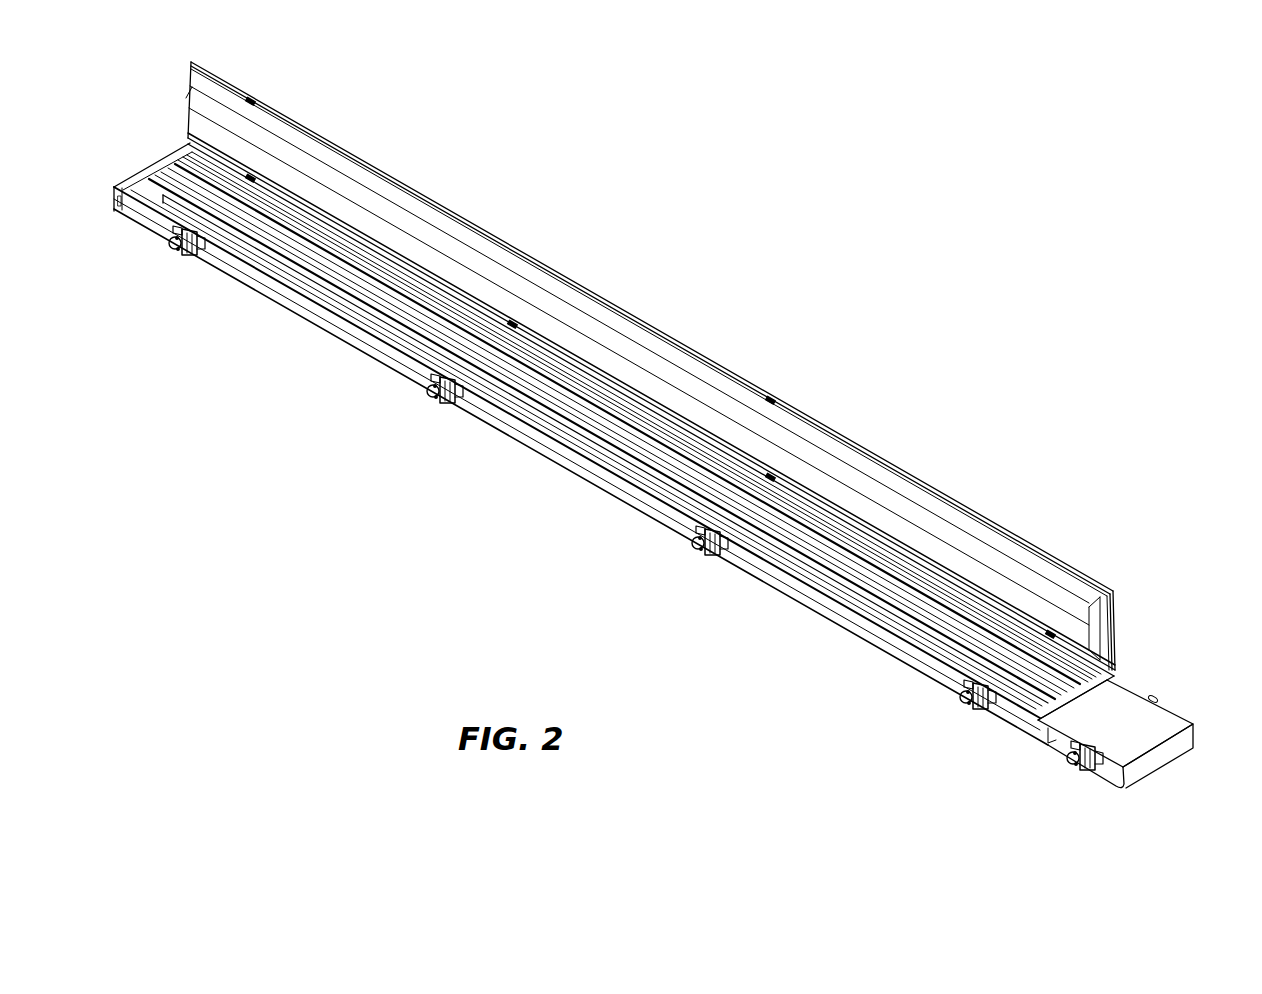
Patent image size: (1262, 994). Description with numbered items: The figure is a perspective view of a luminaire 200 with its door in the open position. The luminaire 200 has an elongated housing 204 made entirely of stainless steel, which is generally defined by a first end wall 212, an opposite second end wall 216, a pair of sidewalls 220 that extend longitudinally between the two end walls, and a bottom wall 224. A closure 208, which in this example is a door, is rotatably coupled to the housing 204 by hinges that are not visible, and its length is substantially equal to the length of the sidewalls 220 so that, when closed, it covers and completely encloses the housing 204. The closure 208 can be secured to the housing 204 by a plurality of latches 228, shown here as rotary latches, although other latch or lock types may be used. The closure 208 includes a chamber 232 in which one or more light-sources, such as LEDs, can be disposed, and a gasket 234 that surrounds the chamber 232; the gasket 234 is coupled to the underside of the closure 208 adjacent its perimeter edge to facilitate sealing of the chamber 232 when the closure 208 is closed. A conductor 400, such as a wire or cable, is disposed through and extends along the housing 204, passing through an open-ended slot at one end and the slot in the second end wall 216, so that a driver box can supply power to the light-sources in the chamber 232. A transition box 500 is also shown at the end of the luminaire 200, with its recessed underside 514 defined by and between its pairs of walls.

The luminaire 200 is at (670, 453).
The housing 204 is at (617, 457).
The closure 208 is at (706, 366).
The first end wall 212 is at (160, 178).
The second end wall 216 is at (1072, 695).
The sidewalls 220 is at (280, 237).
The bottom wall 224 is at (355, 297).
The latches 228 is at (699, 566).
The chamber 232 is at (750, 440).
The gasket 234 is at (1102, 610).
The conductor 400 is at (610, 453).
The transition box 500 is at (1126, 743).
The recessed underside 514 is at (1070, 747).